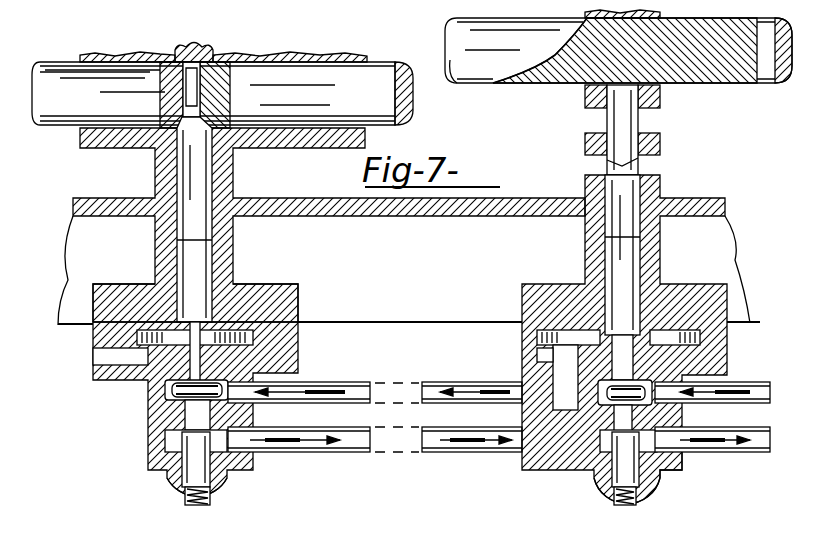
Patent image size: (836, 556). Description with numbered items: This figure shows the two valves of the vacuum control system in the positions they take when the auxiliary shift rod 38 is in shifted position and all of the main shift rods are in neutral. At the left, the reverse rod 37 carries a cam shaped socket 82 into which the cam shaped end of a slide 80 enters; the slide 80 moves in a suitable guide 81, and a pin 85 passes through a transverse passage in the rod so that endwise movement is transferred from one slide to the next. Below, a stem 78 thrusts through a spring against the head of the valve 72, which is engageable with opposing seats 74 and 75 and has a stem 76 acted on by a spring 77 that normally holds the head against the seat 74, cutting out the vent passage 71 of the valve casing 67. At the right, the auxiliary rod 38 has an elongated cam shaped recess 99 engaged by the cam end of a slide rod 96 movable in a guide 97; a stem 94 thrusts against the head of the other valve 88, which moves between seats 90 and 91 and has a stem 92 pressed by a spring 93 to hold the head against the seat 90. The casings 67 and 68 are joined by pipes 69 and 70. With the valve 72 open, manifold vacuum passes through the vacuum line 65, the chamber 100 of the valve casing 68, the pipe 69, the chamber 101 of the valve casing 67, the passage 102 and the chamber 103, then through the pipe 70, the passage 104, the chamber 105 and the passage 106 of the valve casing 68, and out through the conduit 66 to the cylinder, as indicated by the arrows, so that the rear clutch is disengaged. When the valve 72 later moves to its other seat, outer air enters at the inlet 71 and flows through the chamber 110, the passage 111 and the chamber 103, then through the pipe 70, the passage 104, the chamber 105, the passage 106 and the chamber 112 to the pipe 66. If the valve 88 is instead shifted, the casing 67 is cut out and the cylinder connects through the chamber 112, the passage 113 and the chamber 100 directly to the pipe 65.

The reverse rod 37 is at (408, 62).
The auxiliary shift rod 38 is at (750, 30).
The pin 85 is at (200, 65).
The cam shaped socket 82 is at (203, 103).
The guide 81 is at (165, 176).
The slide 80 is at (203, 178).
The cam shaped recess 99 is at (520, 78).
The slide rod 96 is at (627, 122).
The guide 97 is at (657, 143).
The seat 74 is at (167, 353).
The stem 78 is at (237, 300).
The chamber 110 is at (135, 339).
The passage 111 is at (255, 348).
The vent passage 71 is at (135, 374).
The chamber 103 is at (167, 393).
The seat 75 is at (177, 403).
The passage 102 is at (178, 420).
The chamber 101 is at (160, 477).
The spring 77 is at (187, 500).
The valve casing 67 is at (213, 518).
The pipe 70 is at (332, 382).
The pipe 69 is at (335, 452).
The valve 72 is at (230, 412).
The stem 76 is at (227, 465).
The stem 94 is at (600, 330).
The chamber 105 is at (568, 335).
The passage 106 is at (598, 352).
The passage 104 is at (560, 375).
The seat 90 is at (600, 398).
The seat 91 is at (555, 430).
The stem 92 is at (607, 452).
The valve 88 is at (578, 442).
The spring 93 is at (617, 490).
The valve casing 68 is at (645, 510).
The chamber 112 is at (653, 348).
The conduit 66 is at (740, 382).
The passage 113 is at (660, 414).
The vacuum line 65 is at (758, 427).
The chamber 100 is at (652, 445).